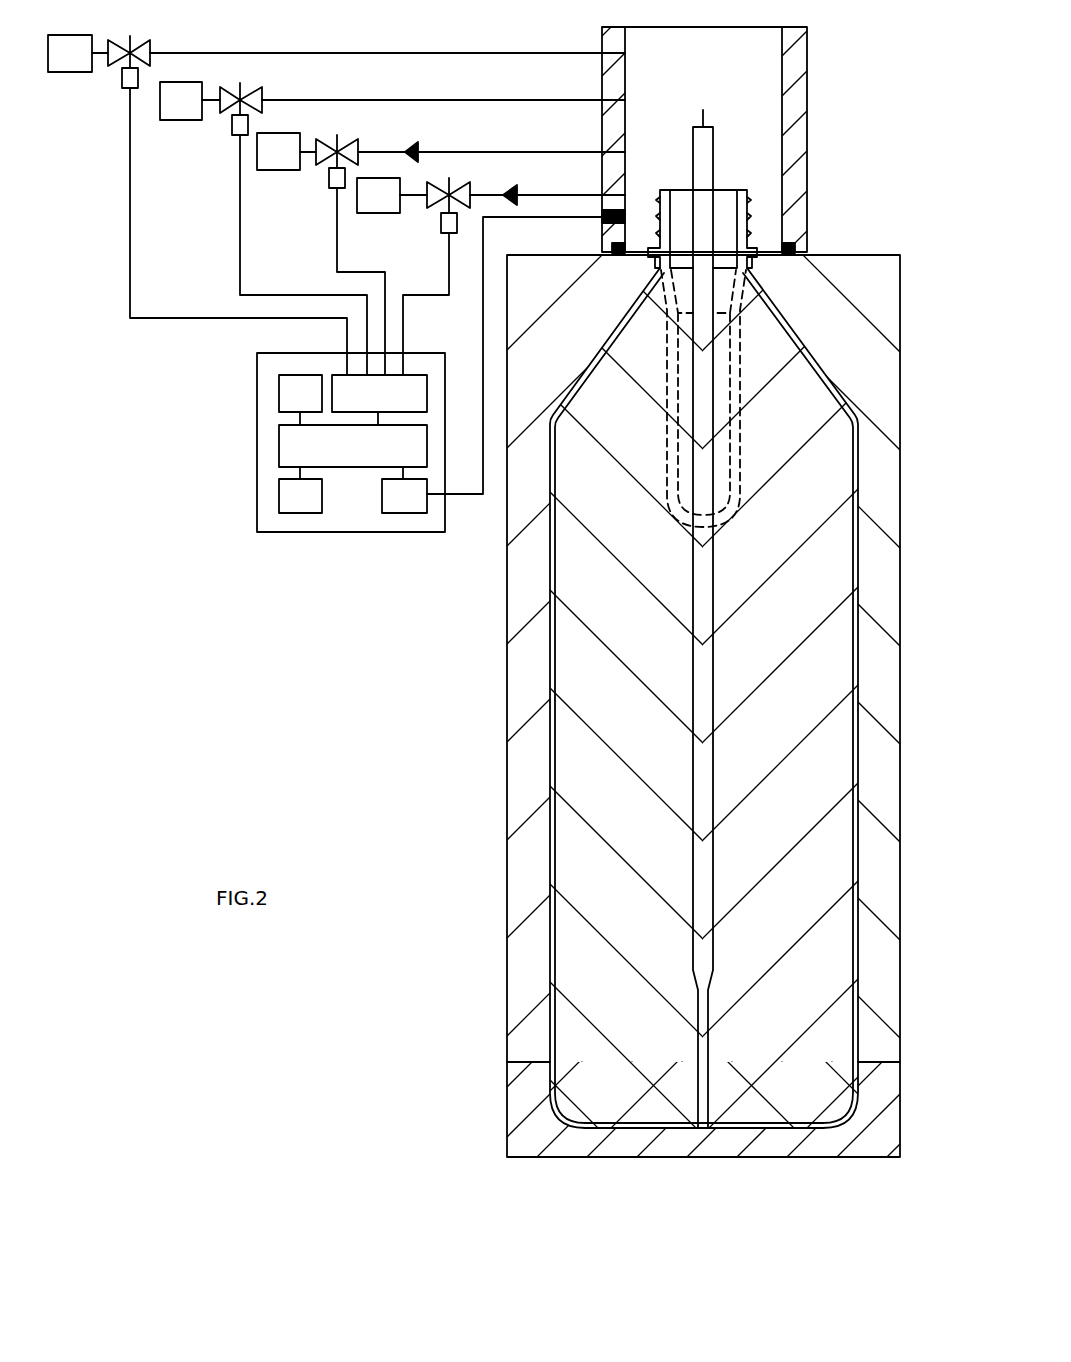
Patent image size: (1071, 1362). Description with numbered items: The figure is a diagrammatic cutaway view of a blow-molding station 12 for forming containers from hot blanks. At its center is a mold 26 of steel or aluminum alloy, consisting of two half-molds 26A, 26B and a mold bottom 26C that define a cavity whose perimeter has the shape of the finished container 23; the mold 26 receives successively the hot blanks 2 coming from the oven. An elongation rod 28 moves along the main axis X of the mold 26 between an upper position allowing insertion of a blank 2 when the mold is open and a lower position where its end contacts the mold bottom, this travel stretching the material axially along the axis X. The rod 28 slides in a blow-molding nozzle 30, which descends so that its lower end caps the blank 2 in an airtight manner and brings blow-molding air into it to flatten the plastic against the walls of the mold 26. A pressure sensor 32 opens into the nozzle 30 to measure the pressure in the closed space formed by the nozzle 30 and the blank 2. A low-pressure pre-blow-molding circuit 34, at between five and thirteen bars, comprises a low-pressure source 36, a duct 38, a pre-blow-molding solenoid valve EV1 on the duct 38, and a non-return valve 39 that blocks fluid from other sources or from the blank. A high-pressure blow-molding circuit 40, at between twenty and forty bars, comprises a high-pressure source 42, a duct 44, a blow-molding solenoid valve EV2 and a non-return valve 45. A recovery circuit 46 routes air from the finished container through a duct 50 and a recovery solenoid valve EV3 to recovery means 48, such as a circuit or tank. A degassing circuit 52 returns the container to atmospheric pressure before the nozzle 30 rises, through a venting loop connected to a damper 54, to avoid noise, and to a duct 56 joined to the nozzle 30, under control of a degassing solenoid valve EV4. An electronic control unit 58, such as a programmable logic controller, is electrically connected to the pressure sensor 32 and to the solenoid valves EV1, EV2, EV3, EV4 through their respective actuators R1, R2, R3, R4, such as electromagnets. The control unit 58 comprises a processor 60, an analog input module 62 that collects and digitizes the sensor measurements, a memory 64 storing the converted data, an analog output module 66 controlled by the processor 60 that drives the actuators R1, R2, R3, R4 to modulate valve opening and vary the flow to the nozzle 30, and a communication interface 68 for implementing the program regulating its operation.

The blank 2 is at (745, 470).
The blow molding station 12 is at (873, 150).
The finished container 23 is at (855, 625).
The mold 26 is at (535, 713).
The half-mold 26A is at (880, 592).
The half-mold 26B is at (520, 690).
The mold bottom 26C is at (618, 1145).
The elongation rod 28 is at (720, 695).
The blow-molding nozzle 30 is at (800, 72).
The pressure sensor 32 is at (603, 216).
The low-pressure pre-blow-molding circuit 34 is at (410, 200).
The low-pressure source 36 is at (378, 195).
The duct 38 is at (593, 192).
The non-return valve 39 is at (532, 180).
The high-pressure blow-molding circuit 40 is at (303, 158).
The high-pressure source 42 is at (278, 151).
The duct 44 is at (525, 150).
The non-return valve 45 is at (435, 133).
The recovery circuit 46 is at (212, 103).
The recovery means 48 is at (181, 101).
The duct 50 is at (385, 100).
The degassing circuit 52 is at (100, 56).
The damper 54 is at (70, 53).
The duct 56 is at (325, 53).
The electronic control unit 58 is at (429, 401).
The processor 60 is at (353, 446).
The analog input module 62 is at (492, 365).
The memory 64 is at (300, 496).
The analog output module 66 is at (379, 393).
The communication interface 68 is at (300, 393).
The pre-blow-molding solenoid valve EV1 is at (428, 180).
The blow-molding solenoid valve EV2 is at (362, 140).
The recovery solenoid valve EV3 is at (268, 72).
The degassing solenoid valve EV4 is at (148, 42).
The actuator R1 is at (446, 233).
The actuator R2 is at (331, 189).
The actuator R3 is at (235, 136).
The actuator R4 is at (126, 90).
The main axis X is at (705, 856).